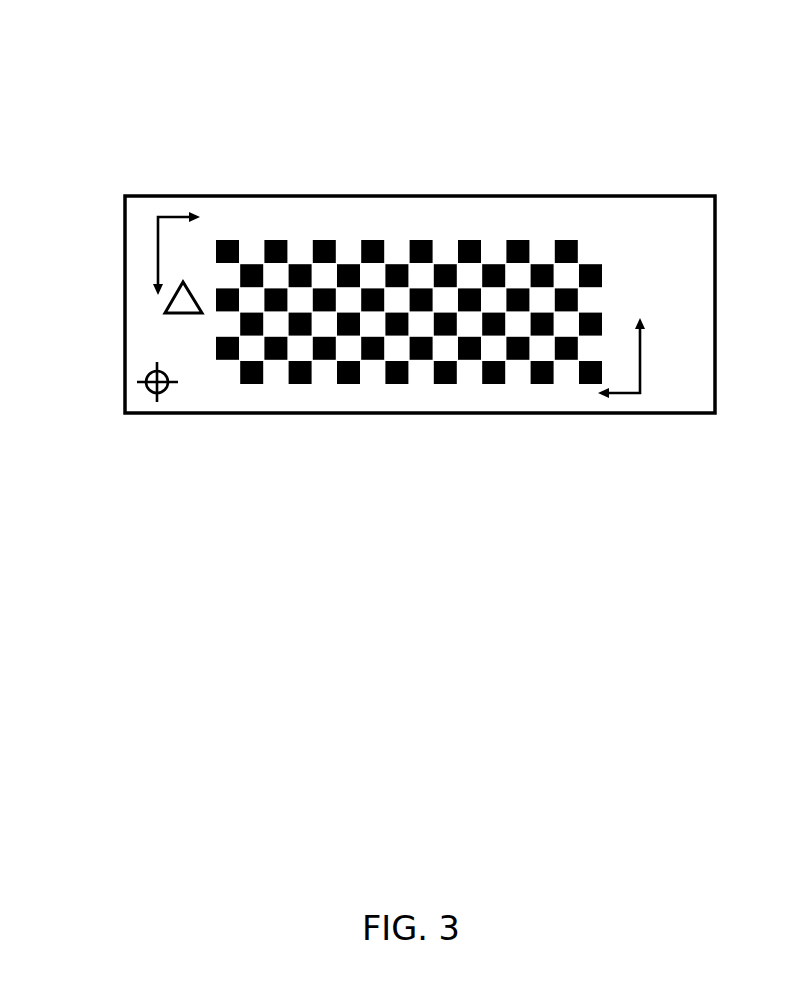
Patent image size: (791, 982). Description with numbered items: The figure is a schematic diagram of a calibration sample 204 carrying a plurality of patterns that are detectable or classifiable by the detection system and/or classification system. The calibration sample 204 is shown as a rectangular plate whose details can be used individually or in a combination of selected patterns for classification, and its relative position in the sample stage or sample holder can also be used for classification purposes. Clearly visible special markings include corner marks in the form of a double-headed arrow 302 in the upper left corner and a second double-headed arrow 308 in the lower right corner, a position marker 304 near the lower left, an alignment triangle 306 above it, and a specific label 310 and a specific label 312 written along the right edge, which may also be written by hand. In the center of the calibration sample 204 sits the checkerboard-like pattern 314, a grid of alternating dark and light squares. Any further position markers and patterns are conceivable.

The calibration sample 204 is at (402, 140).
The double-headed arrow 302 is at (178, 197).
The position marker 304 is at (145, 416).
The alignment triangle 306 is at (147, 315).
The double-headed arrow 308 is at (617, 420).
The specific label 310 is at (632, 210).
The specific label 312 is at (682, 210).
The checkerboard-like pattern 314 is at (387, 404).